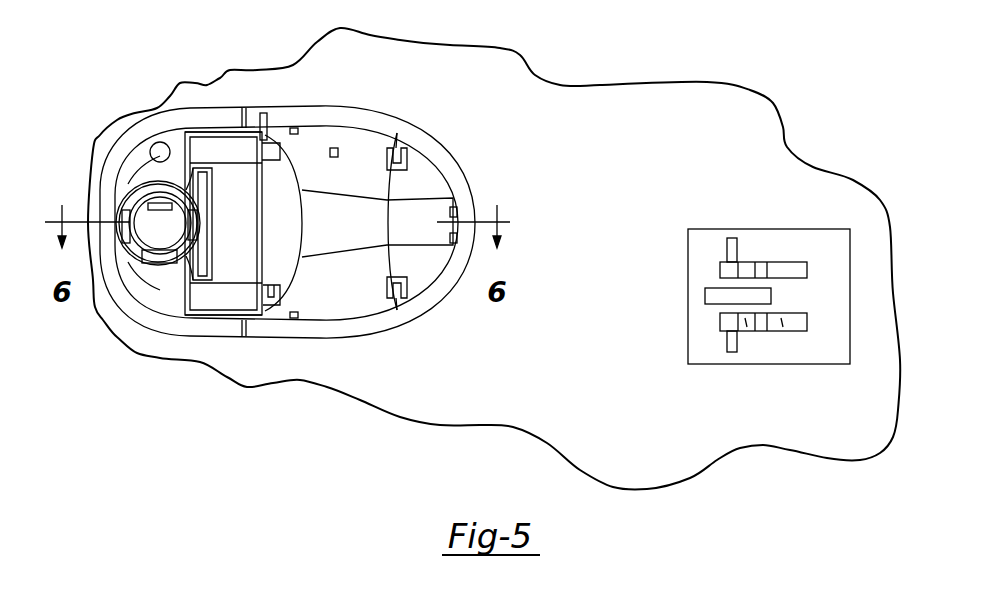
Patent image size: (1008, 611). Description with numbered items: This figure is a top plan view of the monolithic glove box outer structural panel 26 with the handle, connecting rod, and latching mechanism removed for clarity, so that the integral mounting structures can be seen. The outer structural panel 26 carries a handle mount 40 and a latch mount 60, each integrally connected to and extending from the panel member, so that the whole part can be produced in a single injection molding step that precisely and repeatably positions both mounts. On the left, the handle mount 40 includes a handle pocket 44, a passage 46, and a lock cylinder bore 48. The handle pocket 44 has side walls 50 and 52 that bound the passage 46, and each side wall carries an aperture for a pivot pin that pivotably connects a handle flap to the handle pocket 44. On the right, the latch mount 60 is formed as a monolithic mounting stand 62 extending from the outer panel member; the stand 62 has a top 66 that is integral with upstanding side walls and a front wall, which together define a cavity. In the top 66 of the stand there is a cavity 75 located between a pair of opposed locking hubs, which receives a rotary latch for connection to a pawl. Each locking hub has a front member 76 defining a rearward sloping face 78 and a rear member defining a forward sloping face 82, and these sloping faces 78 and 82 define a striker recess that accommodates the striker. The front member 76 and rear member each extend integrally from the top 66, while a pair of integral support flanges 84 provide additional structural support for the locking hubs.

The outer structural panel 26 is at (576, 91).
The handle mount 40 is at (412, 108).
The handle pocket 44 is at (427, 178).
The passage 46 is at (220, 226).
The lock cylinder bore 48 is at (158, 240).
The side wall 50 is at (213, 315).
The side wall 52 is at (222, 130).
The latch mount 60 is at (743, 287).
The mounting stand 62 is at (786, 228).
The top 66 is at (838, 259).
The cavity 75 is at (708, 300).
The front member 76 is at (731, 323).
The rearward sloping face 78 is at (746, 325).
The forward sloping face 82 is at (782, 325).
The support flange 84 is at (732, 240).